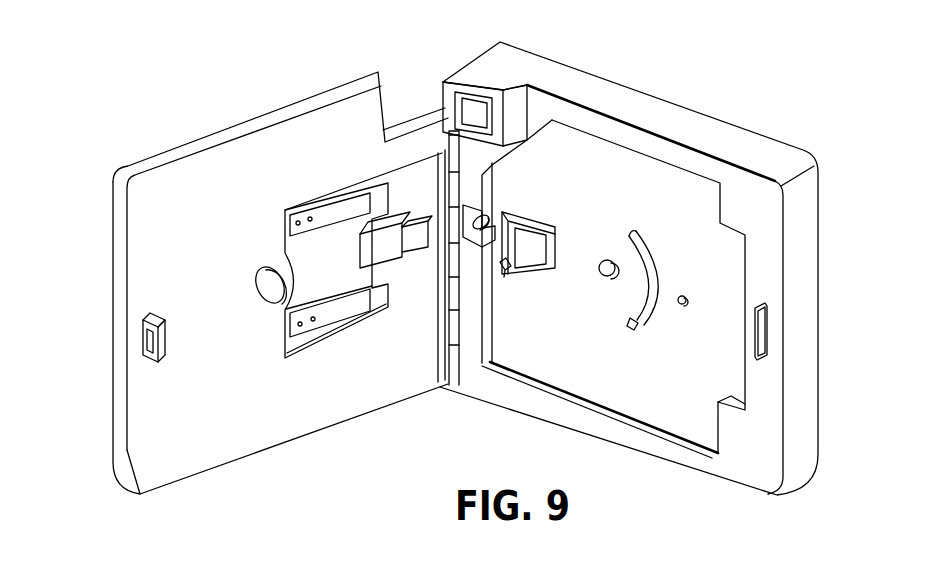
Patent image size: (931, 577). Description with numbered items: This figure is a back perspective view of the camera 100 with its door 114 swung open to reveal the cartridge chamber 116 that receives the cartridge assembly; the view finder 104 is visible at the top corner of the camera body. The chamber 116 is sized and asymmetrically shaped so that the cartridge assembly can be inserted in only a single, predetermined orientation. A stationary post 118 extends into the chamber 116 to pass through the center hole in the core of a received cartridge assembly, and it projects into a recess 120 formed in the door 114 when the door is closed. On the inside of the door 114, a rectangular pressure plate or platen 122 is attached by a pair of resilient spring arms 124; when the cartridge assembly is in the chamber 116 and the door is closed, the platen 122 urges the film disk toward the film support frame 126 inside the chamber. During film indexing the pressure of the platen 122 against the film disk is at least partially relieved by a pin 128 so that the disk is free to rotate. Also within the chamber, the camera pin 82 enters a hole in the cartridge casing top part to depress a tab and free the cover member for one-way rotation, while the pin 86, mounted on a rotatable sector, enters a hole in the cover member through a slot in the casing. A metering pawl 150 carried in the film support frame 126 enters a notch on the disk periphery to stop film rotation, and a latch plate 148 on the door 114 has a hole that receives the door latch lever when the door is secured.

The camera 100 is at (684, 46).
The view finder 104 is at (447, 100).
The door 114 is at (257, 443).
The cartridge chamber 116 is at (593, 372).
The stationary post 118 is at (602, 277).
The recess 120 is at (261, 301).
The pressure plate or platen 122 is at (393, 259).
The resilient spring arms 124 is at (357, 203).
The film support frame 126 is at (536, 276).
The pin 128 is at (490, 226).
The latch plate 148 is at (162, 363).
The metering pawl 150 is at (503, 266).
The camera pin 82 is at (677, 306).
The pin 86 is at (629, 326).